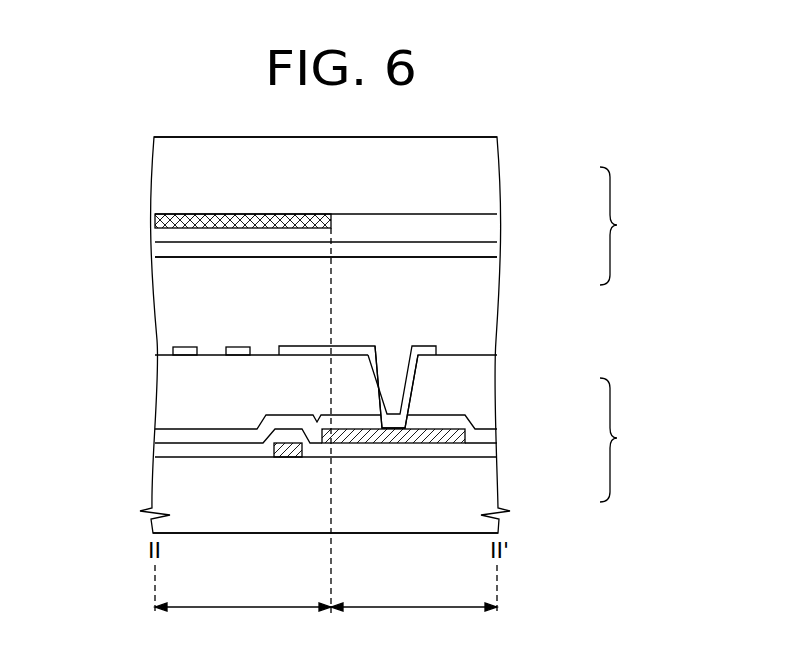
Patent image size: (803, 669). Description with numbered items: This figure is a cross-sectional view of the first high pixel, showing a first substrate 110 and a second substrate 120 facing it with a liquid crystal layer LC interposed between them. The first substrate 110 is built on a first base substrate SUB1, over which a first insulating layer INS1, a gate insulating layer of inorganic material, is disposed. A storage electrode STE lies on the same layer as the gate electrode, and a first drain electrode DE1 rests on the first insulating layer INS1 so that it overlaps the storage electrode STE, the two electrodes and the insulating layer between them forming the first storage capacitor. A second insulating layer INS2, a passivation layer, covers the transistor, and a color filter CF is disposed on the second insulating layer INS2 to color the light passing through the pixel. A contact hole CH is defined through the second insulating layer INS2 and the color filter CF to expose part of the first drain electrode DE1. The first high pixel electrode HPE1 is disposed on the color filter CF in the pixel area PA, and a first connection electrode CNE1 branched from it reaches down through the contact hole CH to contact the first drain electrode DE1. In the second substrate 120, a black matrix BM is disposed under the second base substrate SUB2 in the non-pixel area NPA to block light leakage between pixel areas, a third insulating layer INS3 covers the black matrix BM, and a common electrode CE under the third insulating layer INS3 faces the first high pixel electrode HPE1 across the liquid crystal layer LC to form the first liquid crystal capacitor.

The second base substrate SUB2 is at (487, 180).
The black matrix BM is at (157, 220).
The third insulating layer INS3 is at (487, 229).
The common electrode CE is at (487, 252).
The second substrate 120 is at (627, 226).
The liquid crystal layer LC is at (487, 304).
The first high pixel electrode HPE1 is at (172, 351).
The contact hole CH is at (391, 355).
The first connection electrode CNE1 is at (423, 349).
The color filter CF is at (487, 388).
The second insulating layer INS2 is at (487, 437).
The first drain electrode DE1 is at (400, 443).
The first insulating layer INS1 is at (487, 455).
The storage electrode STE is at (288, 457).
The first base substrate SUB1 is at (487, 490).
The first substrate 110 is at (627, 440).
The pixel area PA is at (243, 620).
The non-pixel area NPA is at (414, 620).